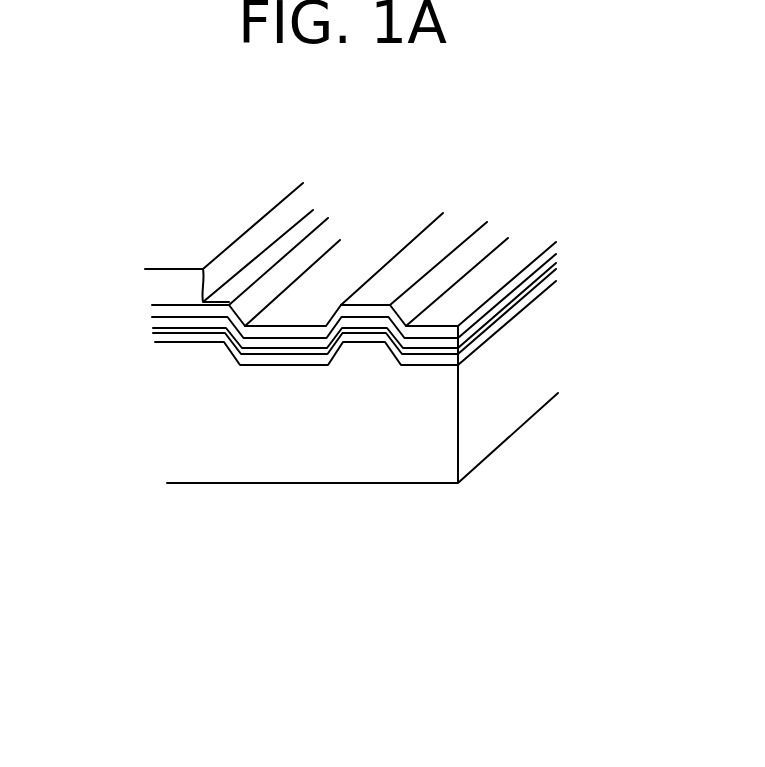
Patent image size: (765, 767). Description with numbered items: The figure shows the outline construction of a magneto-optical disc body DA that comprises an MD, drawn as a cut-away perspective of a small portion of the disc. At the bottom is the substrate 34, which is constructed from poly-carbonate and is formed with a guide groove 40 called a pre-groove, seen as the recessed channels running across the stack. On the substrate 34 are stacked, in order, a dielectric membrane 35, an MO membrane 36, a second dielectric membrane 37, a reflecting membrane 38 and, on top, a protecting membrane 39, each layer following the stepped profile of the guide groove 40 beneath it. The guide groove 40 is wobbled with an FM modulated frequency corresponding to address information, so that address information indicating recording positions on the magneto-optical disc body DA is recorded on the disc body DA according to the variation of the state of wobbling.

The substrate 34 is at (418, 467).
The dielectric membrane 35 is at (155, 342).
The MO membrane 36 is at (155, 330).
The dielectric membrane 37 is at (155, 322).
The reflecting membrane 38 is at (152, 305).
The protecting membrane 39 is at (167, 282).
The guide groove 40 is at (305, 310).
The magneto-optical disc body DA is at (220, 230).